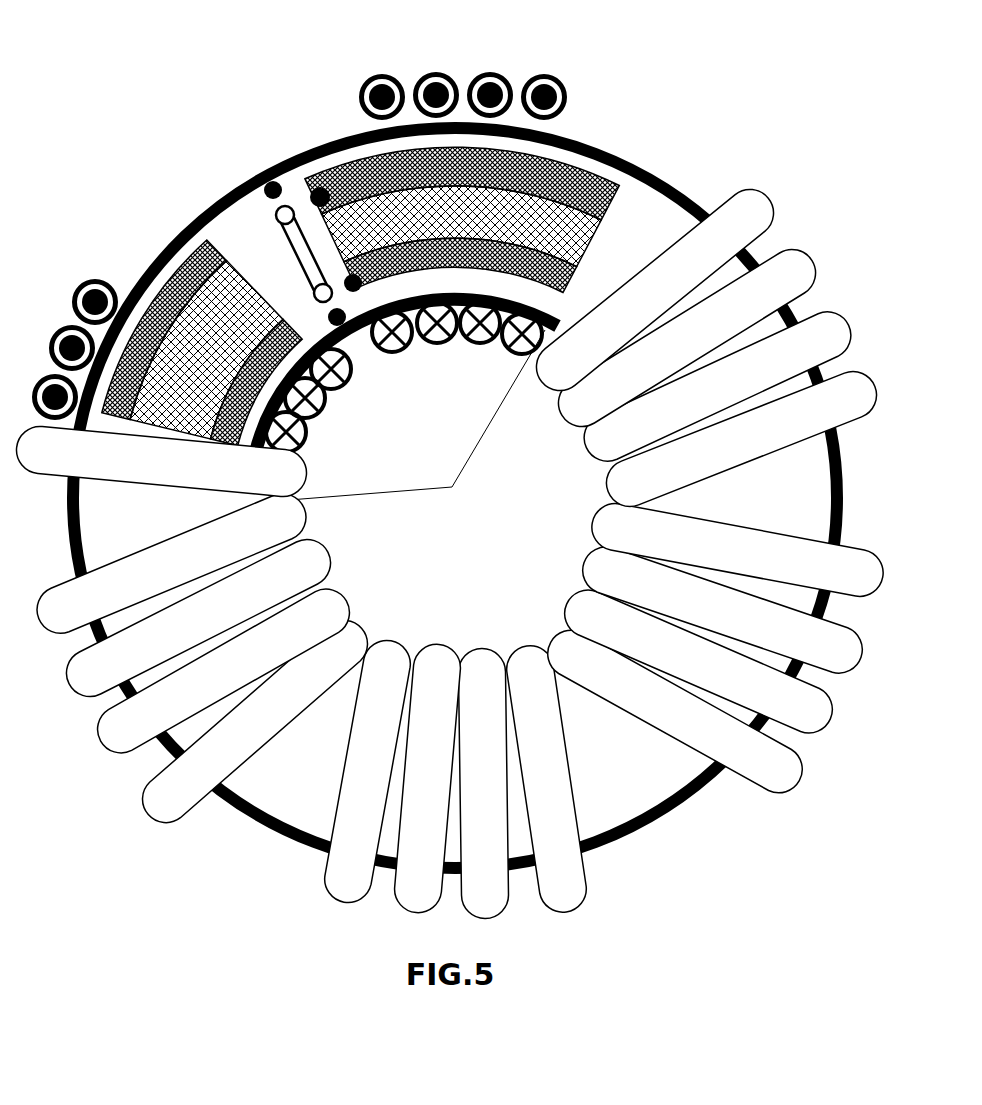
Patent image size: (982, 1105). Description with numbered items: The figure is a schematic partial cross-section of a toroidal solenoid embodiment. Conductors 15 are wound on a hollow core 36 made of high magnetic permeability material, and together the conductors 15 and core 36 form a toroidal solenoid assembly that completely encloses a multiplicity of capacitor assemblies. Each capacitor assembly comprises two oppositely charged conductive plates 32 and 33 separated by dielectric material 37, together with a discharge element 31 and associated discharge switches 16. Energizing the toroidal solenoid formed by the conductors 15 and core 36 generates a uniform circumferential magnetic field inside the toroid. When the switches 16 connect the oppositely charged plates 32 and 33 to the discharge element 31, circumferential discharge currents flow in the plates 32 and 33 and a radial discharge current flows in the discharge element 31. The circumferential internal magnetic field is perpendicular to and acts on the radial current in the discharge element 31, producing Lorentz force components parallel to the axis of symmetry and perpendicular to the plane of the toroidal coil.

The conductors 15 is at (385, 74).
The discharge switches 16 is at (330, 203).
The discharge element 31 is at (300, 262).
The conductive plate 32 is at (577, 277).
The conductive plate 33 is at (570, 170).
The hollow core 36 is at (186, 226).
The dielectric material 37 is at (585, 236).